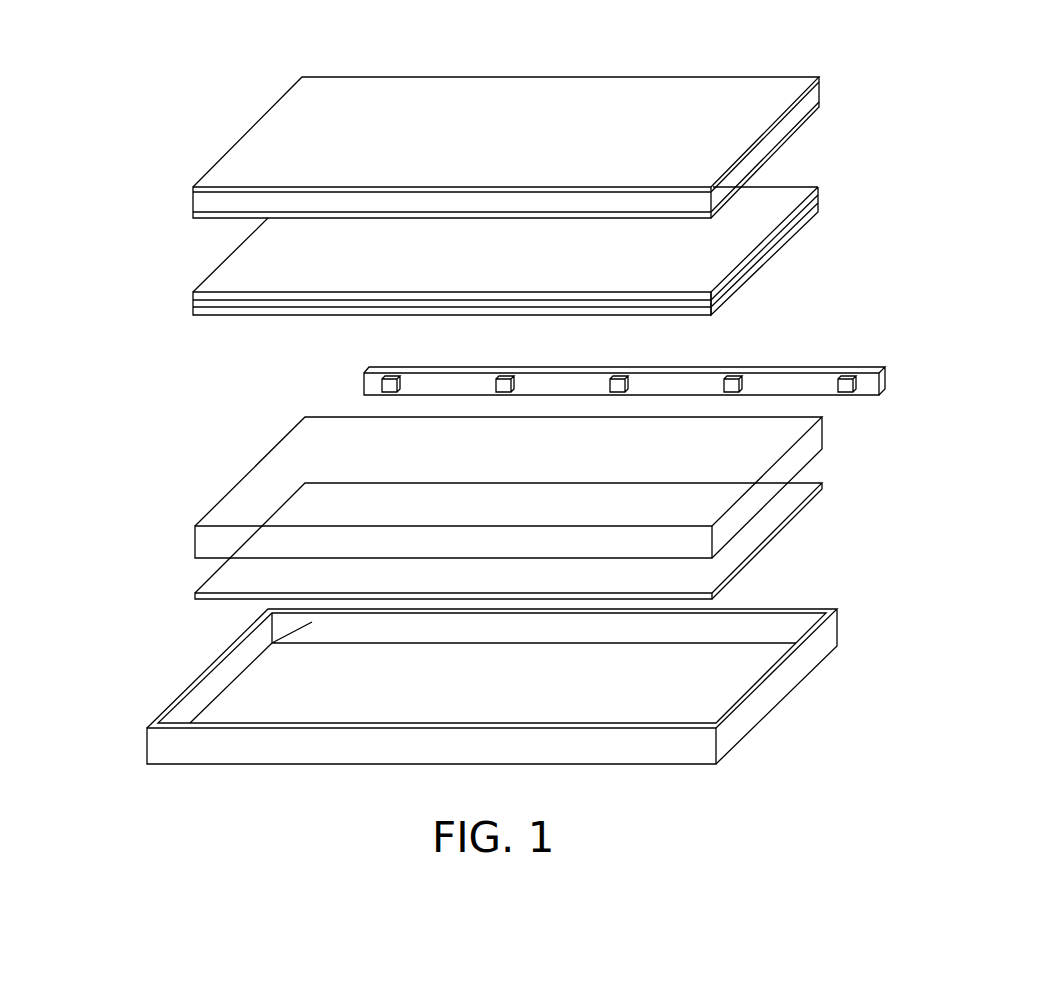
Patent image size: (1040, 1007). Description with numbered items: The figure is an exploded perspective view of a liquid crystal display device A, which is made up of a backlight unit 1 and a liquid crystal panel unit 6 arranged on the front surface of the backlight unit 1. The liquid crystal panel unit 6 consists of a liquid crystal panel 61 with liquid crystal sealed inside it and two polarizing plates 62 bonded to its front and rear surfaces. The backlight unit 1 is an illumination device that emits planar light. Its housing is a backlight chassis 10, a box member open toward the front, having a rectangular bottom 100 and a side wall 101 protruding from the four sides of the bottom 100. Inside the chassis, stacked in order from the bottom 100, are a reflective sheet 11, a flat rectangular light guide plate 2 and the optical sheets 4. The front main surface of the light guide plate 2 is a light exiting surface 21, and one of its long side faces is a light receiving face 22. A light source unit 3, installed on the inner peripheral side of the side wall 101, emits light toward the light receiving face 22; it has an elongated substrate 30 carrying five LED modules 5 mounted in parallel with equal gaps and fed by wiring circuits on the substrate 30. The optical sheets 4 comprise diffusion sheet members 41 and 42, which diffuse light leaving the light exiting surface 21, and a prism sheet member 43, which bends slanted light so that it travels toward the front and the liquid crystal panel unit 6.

The backlight unit 1 is at (960, 170).
The backlight chassis 10 is at (541, 686).
The bottom 100 is at (713, 700).
The side wall 101 is at (270, 643).
The reflective sheet 11 is at (765, 535).
The light guide plate 2 is at (522, 479).
The light exiting surface 21 is at (297, 490).
The light receiving face 22 is at (335, 415).
The light source unit 3 is at (613, 356).
The substrate 30 is at (370, 376).
The LED modules 5 is at (838, 384).
The optical sheets 4 is at (557, 247).
The diffusion sheet member 41 is at (539, 261).
The diffusion sheet member 42 is at (818, 190).
The prism sheet member 43 is at (818, 198).
The liquid crystal panel unit 6 is at (575, 135).
The liquid crystal panel 61 is at (813, 102).
The polarizing plates 62 is at (819, 81).
The liquid crystal display device A is at (254, 97).